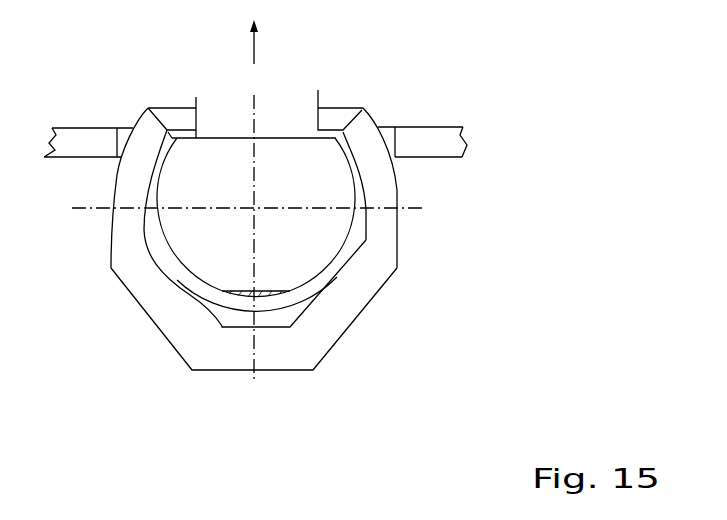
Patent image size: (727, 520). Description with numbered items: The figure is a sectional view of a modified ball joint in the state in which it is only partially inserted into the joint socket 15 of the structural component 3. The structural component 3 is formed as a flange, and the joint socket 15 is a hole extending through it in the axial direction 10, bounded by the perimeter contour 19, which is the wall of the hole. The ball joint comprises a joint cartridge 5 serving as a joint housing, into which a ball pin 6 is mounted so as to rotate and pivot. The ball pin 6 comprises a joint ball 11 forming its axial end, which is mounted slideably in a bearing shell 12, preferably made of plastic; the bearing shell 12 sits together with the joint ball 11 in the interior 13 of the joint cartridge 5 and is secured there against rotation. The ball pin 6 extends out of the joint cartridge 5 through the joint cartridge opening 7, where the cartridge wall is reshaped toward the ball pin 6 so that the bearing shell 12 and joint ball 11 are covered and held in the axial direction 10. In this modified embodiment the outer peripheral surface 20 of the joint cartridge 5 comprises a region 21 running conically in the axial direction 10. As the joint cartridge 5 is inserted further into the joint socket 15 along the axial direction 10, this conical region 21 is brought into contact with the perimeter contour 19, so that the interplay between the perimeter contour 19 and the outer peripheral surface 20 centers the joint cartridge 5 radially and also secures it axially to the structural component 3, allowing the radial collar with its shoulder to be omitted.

The structural component 3 is at (427, 132).
The joint cartridge 5 is at (353, 318).
The ball pin 6 is at (193, 100).
The joint cartridge opening 7 is at (333, 114).
The axial direction 10 is at (257, 43).
The joint ball 11 is at (172, 253).
The bearing shell 12 is at (188, 285).
The interior 13 is at (225, 320).
The joint socket 15 is at (130, 128).
The perimeter contour 19 is at (388, 127).
The outer peripheral surface 20 is at (398, 173).
The conically running region 21 is at (115, 188).